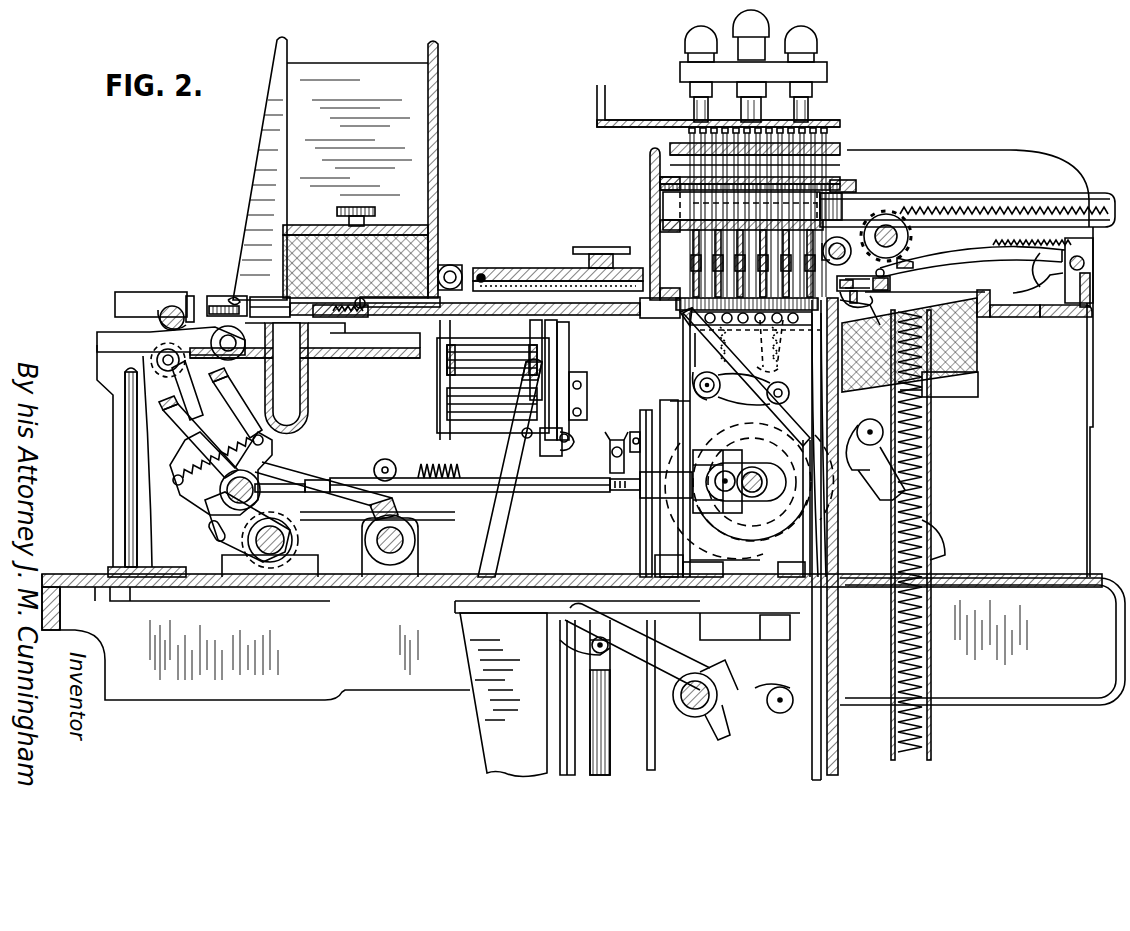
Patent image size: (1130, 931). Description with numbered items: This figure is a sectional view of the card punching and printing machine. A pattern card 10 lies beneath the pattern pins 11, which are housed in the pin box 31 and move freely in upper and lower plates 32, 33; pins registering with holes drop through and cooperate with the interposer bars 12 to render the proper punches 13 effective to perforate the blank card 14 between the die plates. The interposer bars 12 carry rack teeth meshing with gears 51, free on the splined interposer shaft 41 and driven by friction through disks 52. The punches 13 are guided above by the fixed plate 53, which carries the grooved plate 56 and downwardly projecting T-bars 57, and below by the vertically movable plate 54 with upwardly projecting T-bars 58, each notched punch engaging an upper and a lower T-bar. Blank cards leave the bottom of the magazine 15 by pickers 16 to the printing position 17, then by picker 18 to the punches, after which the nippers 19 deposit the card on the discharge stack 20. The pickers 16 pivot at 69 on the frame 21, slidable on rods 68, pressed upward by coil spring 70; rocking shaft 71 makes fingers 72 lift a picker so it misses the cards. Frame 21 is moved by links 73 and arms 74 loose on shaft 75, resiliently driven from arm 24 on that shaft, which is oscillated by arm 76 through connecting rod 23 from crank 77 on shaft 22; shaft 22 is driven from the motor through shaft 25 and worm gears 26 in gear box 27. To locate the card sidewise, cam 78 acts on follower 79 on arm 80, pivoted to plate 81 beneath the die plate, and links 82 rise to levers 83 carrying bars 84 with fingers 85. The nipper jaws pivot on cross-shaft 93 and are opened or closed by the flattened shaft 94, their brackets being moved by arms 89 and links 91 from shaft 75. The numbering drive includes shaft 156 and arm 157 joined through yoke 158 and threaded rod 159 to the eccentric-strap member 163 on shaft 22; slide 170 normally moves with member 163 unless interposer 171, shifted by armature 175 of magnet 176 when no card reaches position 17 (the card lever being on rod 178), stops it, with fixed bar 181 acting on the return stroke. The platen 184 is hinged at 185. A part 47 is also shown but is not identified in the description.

The pattern card 10 is at (836, 190).
The pattern pins 11 is at (815, 127).
The interposer bars 12 is at (863, 206).
The punches 13 is at (748, 232).
The blank card 14 is at (705, 292).
The magazine 15 is at (405, 172).
The picker 16 is at (279, 298).
The printing position 17 is at (548, 268).
The picker 18 is at (480, 293).
The nippers 19 is at (912, 308).
The discharge stack 20 is at (955, 362).
The frame 21 is at (303, 390).
The shaft 22 is at (754, 498).
The connecting rod 23 is at (570, 494).
The arm 24 is at (257, 458).
The shaft 25 is at (632, 432).
The worm gears 26 is at (645, 410).
The gear box 27 is at (694, 392).
The pin box 31 is at (838, 137).
The upper plate 32 is at (840, 146).
The lower plate 33 is at (840, 156).
The interposer shaft 41 is at (890, 232).
The roller 47 is at (843, 240).
The gears 51 is at (897, 228).
The friction disks 52 is at (898, 242).
The upper guide plate 53 is at (660, 226).
The lower guide plate 54 is at (646, 303).
The grooved plate 56 is at (660, 184).
The T-bars 57 is at (812, 233).
The T-bars 58 is at (703, 262).
The rods 68 is at (360, 352).
The pivot 69 is at (238, 296).
The coil spring 70 is at (210, 298).
The shaft 71 is at (170, 312).
The fingers 72 is at (188, 303).
The links 73 is at (148, 338).
The arms 74 is at (185, 378).
The shaft 75 is at (275, 562).
The arm 76 is at (240, 526).
The crank 77 is at (750, 470).
The cam 78 is at (684, 514).
The cam follower 79 is at (811, 445).
The arm 80 is at (738, 385).
The plate 81 is at (706, 365).
The links 82 is at (766, 355).
The levers 83 is at (840, 398).
The bars 84 is at (852, 318).
The fingers 85 is at (682, 312).
The arms 89 is at (878, 506).
The links 91 is at (436, 508).
The cross-shaft 93 is at (891, 284).
The shaft 94 is at (853, 290).
The shaft 156 is at (385, 562).
The arm 157 is at (383, 505).
The yoke 158 is at (398, 470).
The threaded rod 159 is at (545, 478).
The member 163 is at (607, 500).
The slide 170 is at (568, 446).
The interposer 171 is at (540, 445).
The armature 175 is at (440, 400).
The magnet 176 is at (487, 372).
The rod 178 is at (451, 266).
The fixed bar 181 is at (576, 408).
The platen 184 is at (518, 266).
The hinge 185 is at (490, 266).